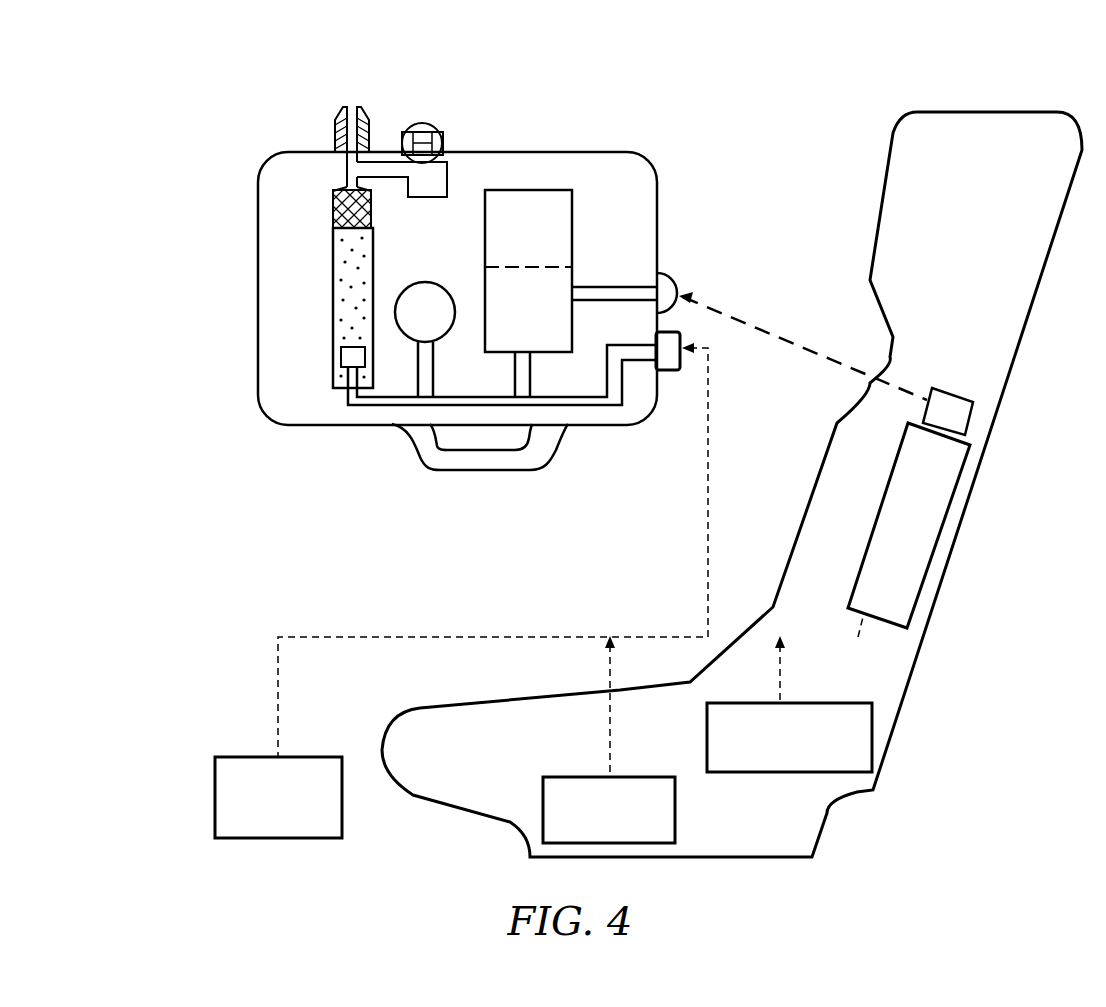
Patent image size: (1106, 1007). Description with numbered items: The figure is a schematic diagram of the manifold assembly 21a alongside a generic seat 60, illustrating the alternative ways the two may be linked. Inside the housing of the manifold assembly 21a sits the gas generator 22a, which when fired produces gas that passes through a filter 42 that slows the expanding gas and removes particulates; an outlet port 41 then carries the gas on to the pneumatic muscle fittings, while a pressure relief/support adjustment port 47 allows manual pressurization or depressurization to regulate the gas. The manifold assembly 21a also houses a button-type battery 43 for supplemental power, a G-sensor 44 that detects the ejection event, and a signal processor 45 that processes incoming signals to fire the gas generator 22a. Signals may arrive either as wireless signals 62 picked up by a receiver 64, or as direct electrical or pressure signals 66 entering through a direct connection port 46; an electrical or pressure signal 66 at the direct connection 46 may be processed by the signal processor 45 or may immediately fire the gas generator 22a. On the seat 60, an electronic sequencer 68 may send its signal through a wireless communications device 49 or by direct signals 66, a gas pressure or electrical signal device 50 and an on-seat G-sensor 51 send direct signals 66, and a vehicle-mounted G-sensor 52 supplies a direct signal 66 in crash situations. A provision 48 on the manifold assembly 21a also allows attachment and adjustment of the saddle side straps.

The manifold assembly 21a is at (258, 343).
The gas generator 22a is at (338, 287).
The outlet port 41 is at (333, 122).
The filter 42 is at (325, 210).
The battery 43 is at (422, 295).
The G-sensor 44 is at (548, 218).
The signal processor 45 is at (545, 283).
The direct connection port 46 is at (666, 375).
The pressure relief/support adjustment port 47 is at (426, 127).
The attachment/adjustment 48 is at (423, 443).
The wireless communications device 49 is at (953, 408).
The gas pressure or electrical signal device 50 is at (798, 745).
The on-seat G-sensor 51 is at (625, 827).
The vehicle-mounted G-sensor 52 is at (254, 767).
The seat 60 is at (732, 484).
The wireless signal 62 is at (782, 335).
The receiver 64 is at (672, 275).
The electrical or pressure signals 66 is at (708, 575).
The electronic sequencer 68 is at (917, 530).